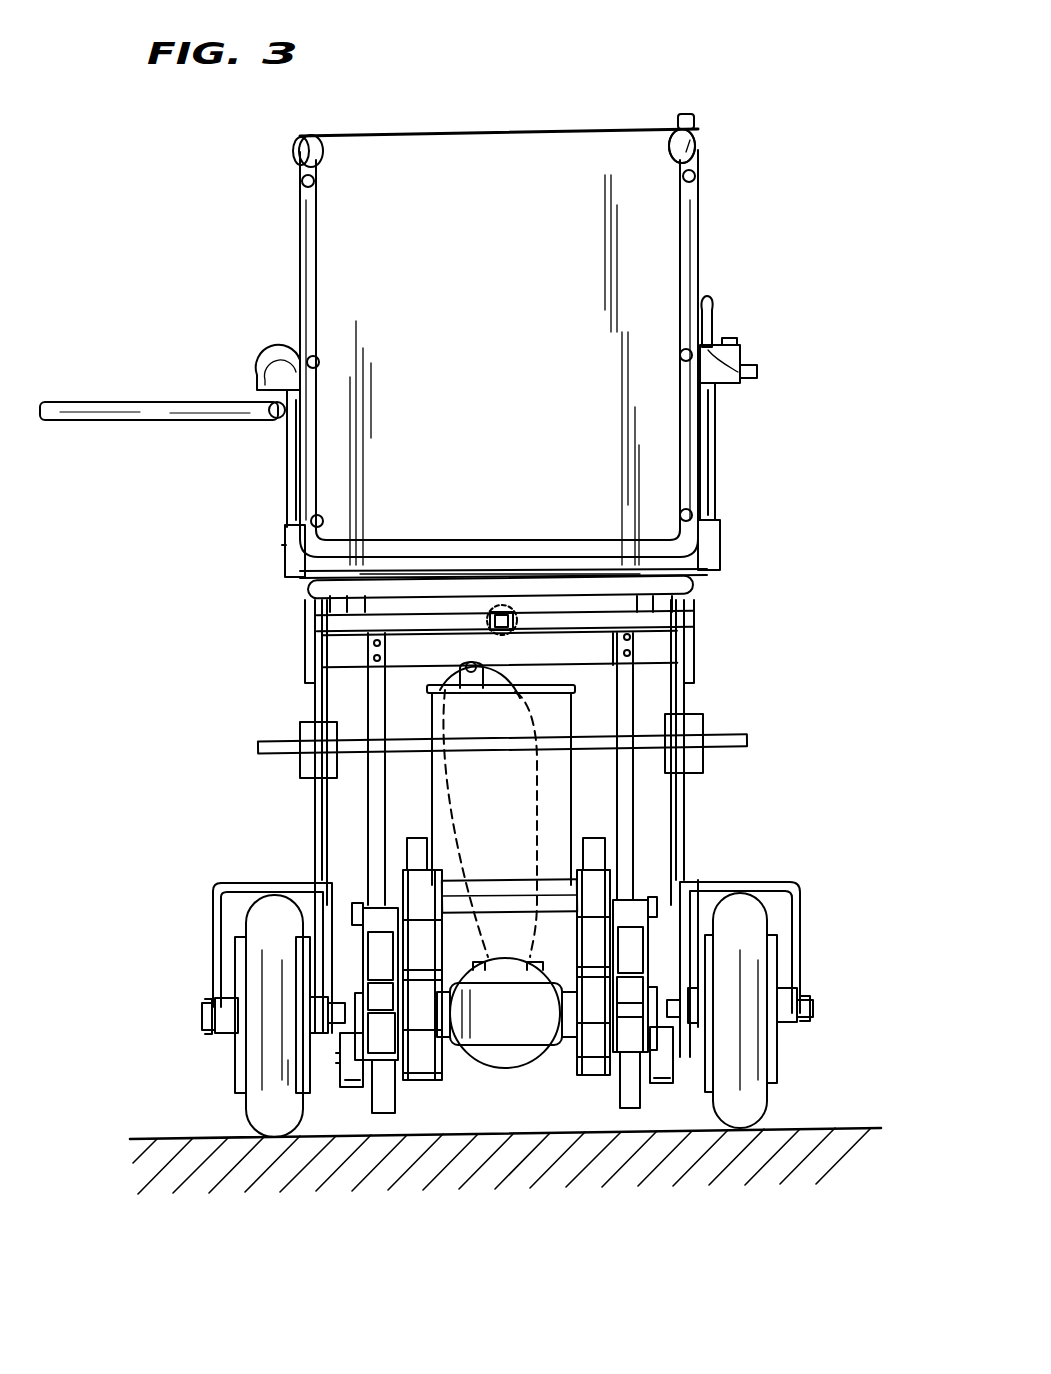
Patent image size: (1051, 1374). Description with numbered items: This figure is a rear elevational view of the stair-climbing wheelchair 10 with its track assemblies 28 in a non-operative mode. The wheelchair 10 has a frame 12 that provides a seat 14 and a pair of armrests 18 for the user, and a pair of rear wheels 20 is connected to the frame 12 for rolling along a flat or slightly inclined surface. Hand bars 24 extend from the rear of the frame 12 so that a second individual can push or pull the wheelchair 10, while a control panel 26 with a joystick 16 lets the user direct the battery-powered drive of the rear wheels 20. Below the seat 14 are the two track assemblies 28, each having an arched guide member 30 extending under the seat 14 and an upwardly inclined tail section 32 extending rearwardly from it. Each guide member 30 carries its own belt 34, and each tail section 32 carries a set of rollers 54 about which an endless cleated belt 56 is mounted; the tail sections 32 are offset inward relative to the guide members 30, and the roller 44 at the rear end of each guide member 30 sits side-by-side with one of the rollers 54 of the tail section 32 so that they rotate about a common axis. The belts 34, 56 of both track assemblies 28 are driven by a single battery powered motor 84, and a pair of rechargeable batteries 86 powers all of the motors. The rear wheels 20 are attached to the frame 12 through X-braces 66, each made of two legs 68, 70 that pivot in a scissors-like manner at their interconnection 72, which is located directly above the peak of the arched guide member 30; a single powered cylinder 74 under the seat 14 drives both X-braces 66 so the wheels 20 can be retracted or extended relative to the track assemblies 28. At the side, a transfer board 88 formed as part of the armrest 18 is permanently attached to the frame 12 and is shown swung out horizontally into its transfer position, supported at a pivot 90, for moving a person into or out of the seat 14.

The wheelchair 10 is at (712, 87).
The frame 12 is at (303, 263).
The seat 14 is at (658, 450).
The joystick 16 is at (717, 300).
The armrest 18 is at (265, 363).
The rear wheel 20 is at (257, 1113).
The hand bar 24 is at (690, 143).
The control panel 26 is at (743, 350).
The track assembly 28 is at (320, 873).
The arched guide member 30 is at (372, 942).
The inclined tail section 32 is at (697, 803).
The belt 34 is at (386, 1100).
The roller 44 is at (377, 1043).
The rollers 54 is at (450, 1057).
The endless cleated belt 56 is at (417, 890).
The X-brace 66 is at (313, 697).
The leg 68 is at (322, 797).
The leg 70 is at (313, 713).
The interconnection 72 is at (300, 737).
The powered cylinder 74 is at (503, 610).
The battery powered motor 84 is at (512, 1067).
The rechargeable battery 86 is at (506, 772).
The transfer board 88 is at (115, 402).
The armrest pivot pin 90 is at (277, 418).